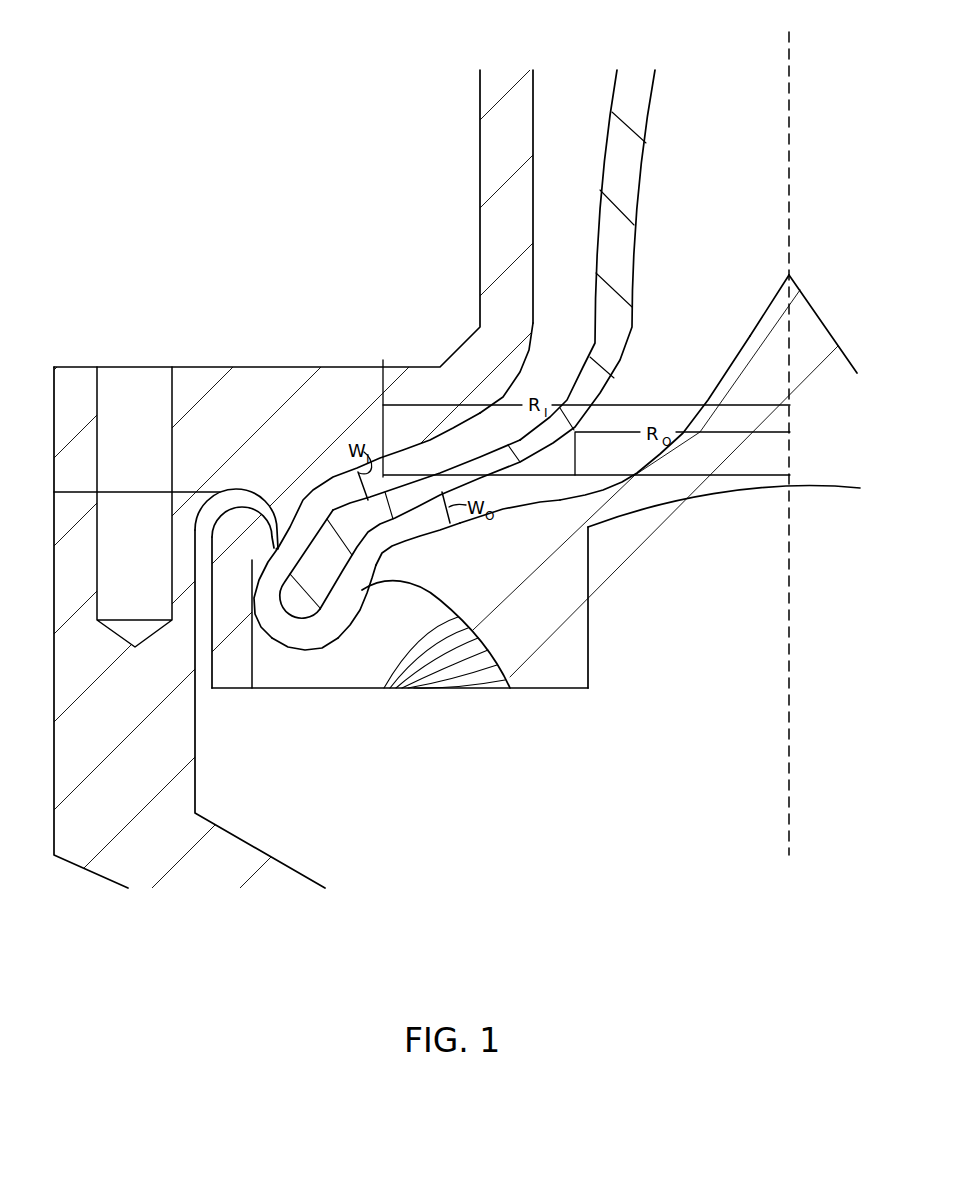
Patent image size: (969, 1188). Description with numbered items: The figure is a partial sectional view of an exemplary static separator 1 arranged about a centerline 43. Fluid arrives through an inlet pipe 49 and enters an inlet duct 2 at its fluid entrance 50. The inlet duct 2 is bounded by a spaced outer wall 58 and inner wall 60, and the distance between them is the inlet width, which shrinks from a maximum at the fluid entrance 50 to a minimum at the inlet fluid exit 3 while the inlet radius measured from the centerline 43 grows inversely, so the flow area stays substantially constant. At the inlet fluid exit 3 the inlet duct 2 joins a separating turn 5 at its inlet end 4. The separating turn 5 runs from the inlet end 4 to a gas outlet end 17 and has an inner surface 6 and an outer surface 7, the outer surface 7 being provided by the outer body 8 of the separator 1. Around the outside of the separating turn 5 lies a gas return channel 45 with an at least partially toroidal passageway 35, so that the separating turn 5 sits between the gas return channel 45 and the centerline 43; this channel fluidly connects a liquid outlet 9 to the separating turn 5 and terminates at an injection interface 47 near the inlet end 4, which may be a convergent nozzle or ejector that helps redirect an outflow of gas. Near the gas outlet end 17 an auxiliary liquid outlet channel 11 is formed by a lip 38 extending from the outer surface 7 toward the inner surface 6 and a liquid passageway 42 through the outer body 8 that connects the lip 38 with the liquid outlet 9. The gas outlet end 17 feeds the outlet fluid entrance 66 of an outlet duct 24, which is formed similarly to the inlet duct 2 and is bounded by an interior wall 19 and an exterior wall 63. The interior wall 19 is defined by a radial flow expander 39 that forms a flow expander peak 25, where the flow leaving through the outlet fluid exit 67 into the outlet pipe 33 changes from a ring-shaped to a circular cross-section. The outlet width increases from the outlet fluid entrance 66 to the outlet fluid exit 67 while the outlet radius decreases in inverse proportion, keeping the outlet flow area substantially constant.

The static separator 1 is at (362, 216).
The inlet duct 2 is at (406, 454).
The inlet fluid exit 3 is at (327, 490).
The inlet end 4 is at (404, 497).
The separating turn 5 is at (283, 646).
The inner surface 6 is at (305, 598).
The outer surface 7 is at (303, 651).
The outer body 8 is at (382, 673).
The liquid outlet 9 is at (448, 764).
The auxiliary liquid outlet channel 11 is at (417, 574).
The gas outlet end 17 is at (391, 551).
The interior wall 19 is at (560, 497).
The outlet duct 24 is at (412, 534).
The flow expander peak 25 is at (791, 277).
The outlet pipe 33 is at (723, 198).
The passageway 35 is at (195, 650).
The lip 38 is at (362, 591).
The radial flow expander 39 is at (810, 367).
The liquid passageway 42 is at (440, 604).
The centerline 43 is at (790, 58).
The gas return channel 45 is at (225, 505).
The injection interface 47 is at (277, 548).
The inlet pipe 49 is at (577, 271).
The fluid entrance 50 is at (552, 341).
The outer wall 58 is at (477, 413).
The inner wall 60 is at (466, 462).
The exterior wall 63 is at (623, 364).
The outlet fluid entrance 66 is at (510, 511).
The outlet fluid exit 67 is at (703, 282).